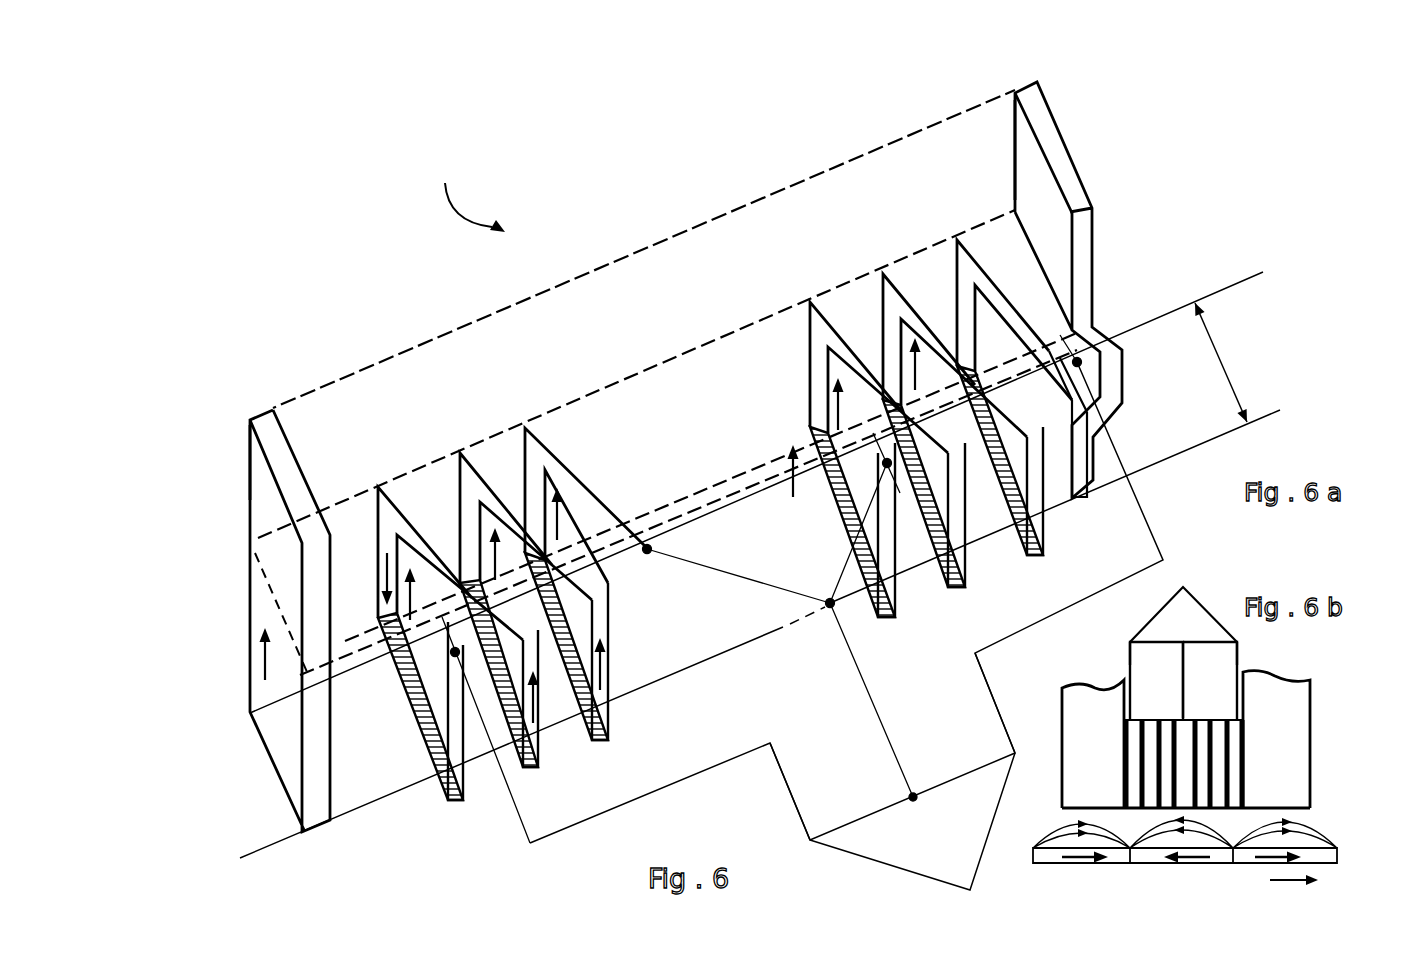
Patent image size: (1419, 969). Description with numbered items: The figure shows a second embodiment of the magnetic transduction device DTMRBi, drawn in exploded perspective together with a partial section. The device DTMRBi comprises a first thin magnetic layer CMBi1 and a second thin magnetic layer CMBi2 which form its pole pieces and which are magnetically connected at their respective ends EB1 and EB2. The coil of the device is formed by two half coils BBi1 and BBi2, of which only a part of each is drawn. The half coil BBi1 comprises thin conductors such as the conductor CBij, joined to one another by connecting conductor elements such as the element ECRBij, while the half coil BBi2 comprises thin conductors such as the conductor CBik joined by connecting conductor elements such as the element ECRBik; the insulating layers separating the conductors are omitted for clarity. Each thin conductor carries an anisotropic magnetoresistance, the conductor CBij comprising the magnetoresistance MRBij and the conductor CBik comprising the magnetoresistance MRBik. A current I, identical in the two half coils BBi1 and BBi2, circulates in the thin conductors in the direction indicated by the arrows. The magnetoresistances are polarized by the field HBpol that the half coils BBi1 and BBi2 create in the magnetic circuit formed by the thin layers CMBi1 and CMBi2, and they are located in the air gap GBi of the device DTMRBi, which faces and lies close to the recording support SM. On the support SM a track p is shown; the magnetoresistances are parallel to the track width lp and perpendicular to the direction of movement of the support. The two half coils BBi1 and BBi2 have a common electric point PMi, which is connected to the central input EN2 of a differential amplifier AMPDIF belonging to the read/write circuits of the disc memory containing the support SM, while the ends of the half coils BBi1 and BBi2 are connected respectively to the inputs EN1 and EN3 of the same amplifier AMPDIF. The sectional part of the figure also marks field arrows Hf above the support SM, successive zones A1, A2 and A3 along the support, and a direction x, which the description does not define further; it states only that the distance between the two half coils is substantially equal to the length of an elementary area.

In FIG. 6, the magnetic transduction device DTMRBi is at (479, 196).
In FIG. 6, the end of first thin magnetic layer EB1 is at (265, 470).
In FIG. 6, the end of second thin magnetic layer EB2 is at (1025, 175).
In FIG. 6, the first half coil BBi1 is at (452, 483).
In FIG. 6b, the first half coil BBi1 is at (1140, 718).
In FIG. 6, the second half coil BBi2 is at (688, 443).
In FIG. 6b, the second half coil BBi2 is at (1200, 725).
In FIG. 6, the first thin magnetic layer CMBi1 is at (336, 545).
In FIG. 6b, the first thin magnetic layer CMBi1 is at (1092, 744).
In FIG. 6, the second thin magnetic layer CMBi2 is at (1093, 226).
In FIG. 6b, the second thin magnetic layer CMBi2 is at (1276, 739).
In FIG. 6, the connecting conductor element ECRBij is at (450, 563).
In FIG. 6, the connecting conductor element ECRBik is at (879, 377).
In FIG. 6, the anisotropic magnetoresistance MRBij is at (512, 710).
In FIG. 6, the anisotropic magnetoresistance MRBik is at (935, 525).
In FIG. 6, the thin conductor CBij is at (535, 768).
In FIG. 6, the thin conductor CBik is at (965, 587).
In FIG. 6, the air gap GBi is at (755, 637).
In FIG. 6b, the air gap GBi is at (1240, 812).
In FIG. 6, the common electric connection point PMi is at (830, 607).
In FIG. 6b, the common electric connection point PMi is at (1183, 718).
In FIG. 6, the amplifier input EN1 is at (803, 791).
In FIG. 6b, the amplifier input EN1 is at (1109, 655).
In FIG. 6, the central amplifier input EN2 is at (921, 783).
In FIG. 6b, the central amplifier input EN2 is at (1199, 680).
In FIG. 6, the amplifier input EN3 is at (992, 711).
In FIG. 6b, the amplifier input EN3 is at (1253, 655).
In FIG. 6, the differential amplifier AMPDIF is at (912, 821).
In FIG. 6b, the differential amplifier AMPDIF is at (1183, 614).
In FIG. 6, the polarizing field HBpol is at (526, 575).
In FIG. 6, the field Hf is at (663, 485).
In FIG. 6b, the field Hf is at (1180, 828).
In FIG. 6, the current I is at (574, 657).
In FIG. 6a, the track width lp is at (1221, 362).
In FIG. 6a, the track p is at (1188, 430).
In FIG. 6b, the recording support SM is at (1042, 852).
In FIG. 6b, the zone 1 A1 is at (1080, 865).
In FIG. 6b, the zone 2 A2 is at (1168, 865).
In FIG. 6b, the zone 3 A3 is at (1248, 865).
In FIG. 6b, the x axis x is at (1302, 880).